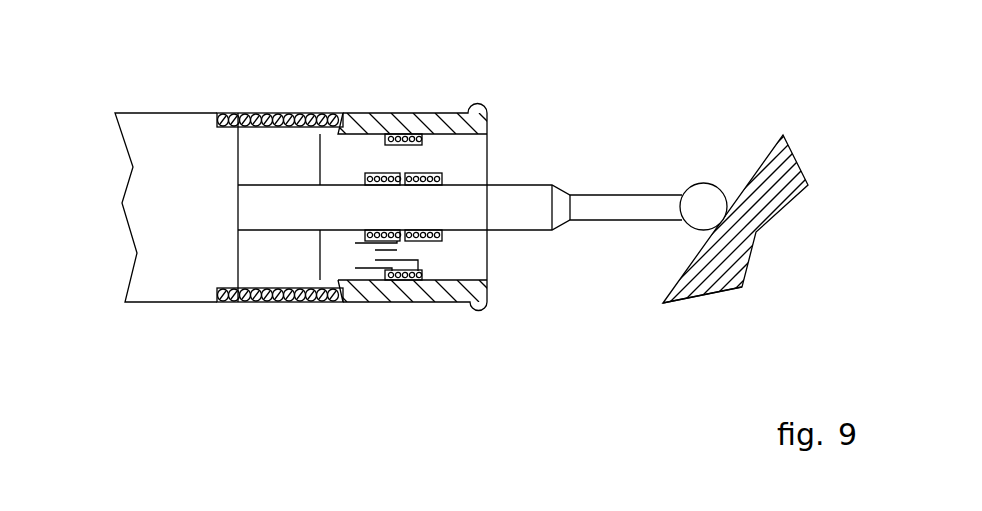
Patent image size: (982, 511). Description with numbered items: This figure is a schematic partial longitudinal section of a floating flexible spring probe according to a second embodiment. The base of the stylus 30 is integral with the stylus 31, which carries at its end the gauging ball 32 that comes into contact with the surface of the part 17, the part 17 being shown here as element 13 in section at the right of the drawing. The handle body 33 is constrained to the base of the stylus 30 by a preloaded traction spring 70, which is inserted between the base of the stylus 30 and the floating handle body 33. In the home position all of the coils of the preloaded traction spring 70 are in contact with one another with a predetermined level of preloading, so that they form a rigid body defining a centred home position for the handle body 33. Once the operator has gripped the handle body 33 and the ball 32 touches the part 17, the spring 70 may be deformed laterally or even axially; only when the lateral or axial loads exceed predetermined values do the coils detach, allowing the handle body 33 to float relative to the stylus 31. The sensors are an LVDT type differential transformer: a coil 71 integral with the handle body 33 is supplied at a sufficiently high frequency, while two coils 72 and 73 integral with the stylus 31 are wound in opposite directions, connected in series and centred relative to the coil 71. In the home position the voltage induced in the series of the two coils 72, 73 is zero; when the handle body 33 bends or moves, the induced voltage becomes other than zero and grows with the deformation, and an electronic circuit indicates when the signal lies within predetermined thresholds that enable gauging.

The base of the stylus 30 is at (155, 137).
The preloaded traction spring 70 is at (257, 118).
The handle body 33 is at (400, 122).
The stylus 31 is at (620, 207).
The gauging ball 32 is at (705, 200).
The actuating lever 13 is at (763, 162).
The part 17 is at (695, 278).
The coil 72 is at (432, 238).
The coil 71 is at (400, 277).
The coil 73 is at (397, 241).